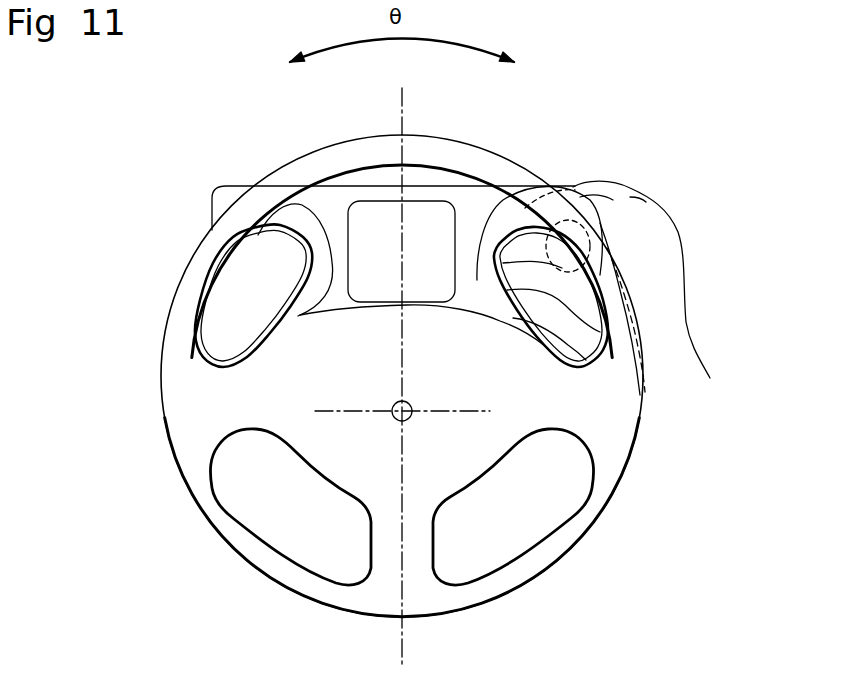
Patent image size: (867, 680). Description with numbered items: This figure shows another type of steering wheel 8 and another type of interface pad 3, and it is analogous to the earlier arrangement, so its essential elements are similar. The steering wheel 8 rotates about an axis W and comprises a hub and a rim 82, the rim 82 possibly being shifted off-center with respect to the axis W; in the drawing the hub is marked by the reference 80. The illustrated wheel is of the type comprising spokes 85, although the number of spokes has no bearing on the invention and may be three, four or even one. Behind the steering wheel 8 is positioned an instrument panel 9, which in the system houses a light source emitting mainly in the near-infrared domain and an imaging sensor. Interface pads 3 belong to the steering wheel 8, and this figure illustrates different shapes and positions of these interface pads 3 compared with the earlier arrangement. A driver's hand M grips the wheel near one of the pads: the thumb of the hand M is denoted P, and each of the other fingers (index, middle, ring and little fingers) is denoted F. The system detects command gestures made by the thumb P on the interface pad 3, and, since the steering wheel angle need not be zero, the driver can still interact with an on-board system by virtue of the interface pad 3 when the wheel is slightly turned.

The steering wheel 8 is at (177, 243).
The rim 82 is at (295, 163).
The instrument panel 9 is at (221, 186).
The interface pad 3 is at (227, 330).
The hub 80 is at (462, 462).
The spokes 85 is at (385, 560).
The axis W is at (393, 405).
The thumb P is at (514, 271).
The hand M is at (650, 220).
The fingers F is at (557, 252).